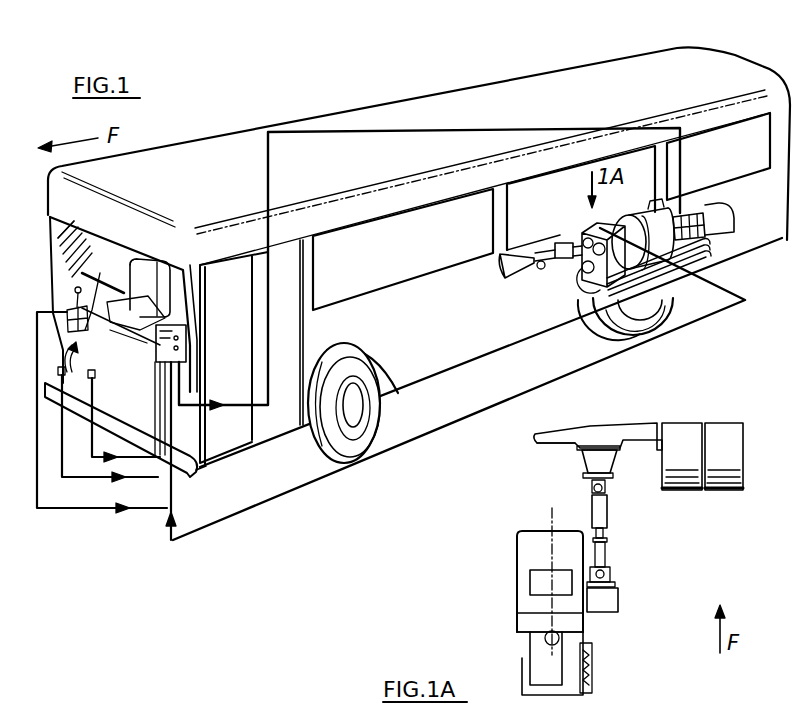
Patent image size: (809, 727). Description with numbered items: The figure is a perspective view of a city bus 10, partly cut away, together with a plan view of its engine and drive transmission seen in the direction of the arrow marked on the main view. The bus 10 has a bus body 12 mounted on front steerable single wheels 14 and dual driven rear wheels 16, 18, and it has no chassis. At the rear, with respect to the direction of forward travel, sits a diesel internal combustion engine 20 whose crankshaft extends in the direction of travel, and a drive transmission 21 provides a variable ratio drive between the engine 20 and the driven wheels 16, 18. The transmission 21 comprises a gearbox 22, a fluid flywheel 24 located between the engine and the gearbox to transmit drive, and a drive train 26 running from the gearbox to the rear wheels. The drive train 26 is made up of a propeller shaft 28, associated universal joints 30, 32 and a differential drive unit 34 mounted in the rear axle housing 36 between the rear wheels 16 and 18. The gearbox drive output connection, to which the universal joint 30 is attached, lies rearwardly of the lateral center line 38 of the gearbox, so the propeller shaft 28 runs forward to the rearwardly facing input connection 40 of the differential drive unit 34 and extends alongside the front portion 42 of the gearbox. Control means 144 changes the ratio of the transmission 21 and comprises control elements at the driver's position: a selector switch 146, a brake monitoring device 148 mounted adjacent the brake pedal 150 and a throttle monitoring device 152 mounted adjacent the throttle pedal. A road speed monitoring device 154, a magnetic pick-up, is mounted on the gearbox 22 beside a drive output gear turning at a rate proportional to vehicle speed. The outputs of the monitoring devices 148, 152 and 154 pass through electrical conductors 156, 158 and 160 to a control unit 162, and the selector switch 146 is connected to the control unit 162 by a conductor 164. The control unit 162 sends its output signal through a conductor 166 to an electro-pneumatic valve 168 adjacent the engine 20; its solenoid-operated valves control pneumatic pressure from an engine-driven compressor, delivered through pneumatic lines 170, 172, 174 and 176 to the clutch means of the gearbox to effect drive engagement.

In FIG. 1, the city bus 10 is at (190, 133).
In FIG. 1, the bus body 12 is at (277, 124).
In FIG. 1, the front steerable single wheels 14 is at (367, 430).
In FIG. 1, the dual driven rear wheel 16 is at (580, 323).
In FIG. 1A, the dual driven rear wheel 16 is at (680, 430).
In FIG. 1, the dual driven rear wheel 18 is at (611, 322).
In FIG. 1A, the dual driven rear wheel 18 is at (720, 430).
In FIG. 1, the diesel internal combustion engine 20 is at (683, 212).
In FIG. 1A, the diesel internal combustion engine 20 is at (542, 665).
In FIG. 1A, the drive transmission 21 is at (508, 624).
In FIG. 1, the gearbox 22 is at (600, 228).
In FIG. 1A, the gearbox 22 is at (526, 557).
In FIG. 1A, the fluid flywheel 24 is at (592, 625).
In FIG. 1A, the drive train 26 is at (613, 614).
In FIG. 1, the propeller shaft 28 is at (552, 246).
In FIG. 1A, the propeller shaft 28 is at (610, 512).
In FIG. 1A, the universal joint 30 is at (612, 573).
In FIG. 1, the universal joint 32 is at (540, 272).
In FIG. 1A, the universal joint 32 is at (607, 487).
In FIG. 1A, the differential drive unit 34 is at (633, 427).
In FIG. 1A, the rear axle housing 36 is at (535, 446).
In FIG. 1A, the lateral center line of the gearbox 38 is at (487, 569).
In FIG. 1A, the rearwardly facing input connection 40 is at (587, 458).
In FIG. 1A, the front portion of the gearbox 42 is at (580, 545).
In FIG. 1, the control means 144 is at (73, 272).
In FIG. 1, the selector switch 146 is at (100, 285).
In FIG. 1, the brake monitoring device 148 is at (95, 374).
In FIG. 1, the brake pedal 150 is at (127, 300).
In FIG. 1, the throttle monitoring device 152 is at (98, 397).
In FIG. 1, the road speed monitoring device 154 is at (610, 222).
In FIG. 1, the electrical conductor 156 is at (132, 458).
In FIG. 1, the electrical conductor 158 is at (97, 480).
In FIG. 1, the electrical conductor 160 is at (319, 478).
In FIG. 1, the control unit 162 is at (190, 340).
In FIG. 1, the conductor 164 is at (68, 509).
In FIG. 1, the conductor 166 is at (367, 130).
In FIG. 1, the electro-pneumatic valve 168 is at (713, 198).
In FIG. 1, the pneumatic line 170 is at (659, 270).
In FIG. 1, the pneumatic line 172 is at (657, 276).
In FIG. 1, the pneumatic line 174 is at (658, 264).
In FIG. 1, the pneumatic line 176 is at (598, 300).